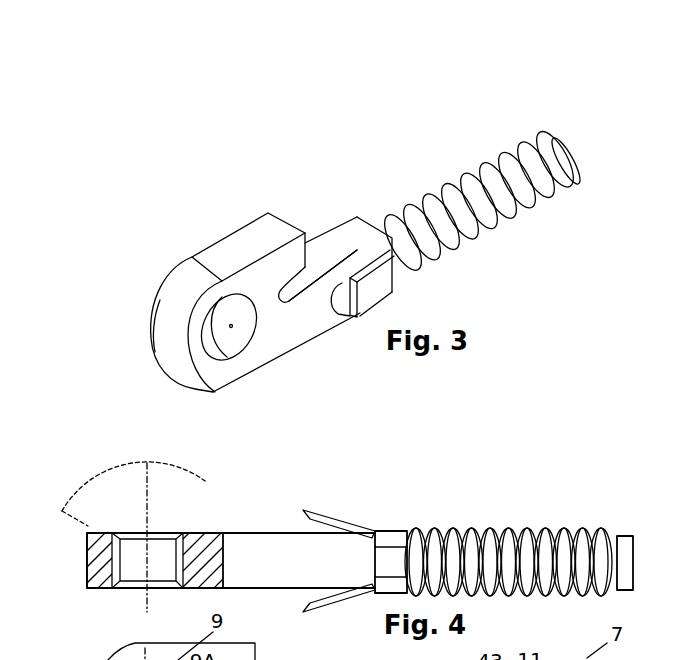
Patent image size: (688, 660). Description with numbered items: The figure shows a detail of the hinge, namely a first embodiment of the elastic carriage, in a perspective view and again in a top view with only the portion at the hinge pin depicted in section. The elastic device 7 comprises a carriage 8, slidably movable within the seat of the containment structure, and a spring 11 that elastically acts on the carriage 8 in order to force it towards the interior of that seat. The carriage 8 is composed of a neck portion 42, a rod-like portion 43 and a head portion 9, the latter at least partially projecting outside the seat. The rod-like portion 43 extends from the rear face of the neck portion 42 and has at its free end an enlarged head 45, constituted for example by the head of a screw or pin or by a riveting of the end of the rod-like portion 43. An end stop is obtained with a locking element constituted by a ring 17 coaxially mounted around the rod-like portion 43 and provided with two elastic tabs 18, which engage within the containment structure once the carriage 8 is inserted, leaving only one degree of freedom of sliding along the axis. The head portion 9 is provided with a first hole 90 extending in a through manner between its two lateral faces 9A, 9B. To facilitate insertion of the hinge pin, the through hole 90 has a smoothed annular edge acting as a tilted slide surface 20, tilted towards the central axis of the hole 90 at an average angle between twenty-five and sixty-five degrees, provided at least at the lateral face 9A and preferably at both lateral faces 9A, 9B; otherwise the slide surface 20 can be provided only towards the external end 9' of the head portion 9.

In FIG. 3, the elastic device 7 is at (352, 122).
In FIG. 4, the elastic device 7 is at (505, 464).
In FIG. 3, the carriage 8 is at (322, 347).
In FIG. 4, the carriage 8 is at (239, 506).
In FIG. 3, the head portion 9 is at (229, 276).
In FIG. 4, the head portion 9 is at (151, 529).
In FIG. 3, the external end of the head portion 9' is at (137, 358).
In FIG. 4, the external end of the head portion 9' is at (64, 560).
In FIG. 3, the lateral face of the head portion 9A is at (261, 283).
In FIG. 3, the lateral face of the head portion 9B is at (200, 253).
In FIG. 3, the spring 11 is at (536, 134).
In FIG. 4, the spring 11 is at (598, 550).
In FIG. 3, the ring 17 is at (385, 216).
In FIG. 4, the ring 17 is at (387, 540).
In FIG. 3, the elastic tabs 18 is at (372, 286).
In FIG. 4, the elastic tabs 18 is at (325, 523).
In FIG. 3, the tilted slide surface 20 is at (228, 358).
In FIG. 4, the tilted slide surface 20 is at (121, 538).
In FIG. 3, the neck portion 42 is at (333, 245).
In FIG. 4, the neck portion 42 is at (270, 550).
In FIG. 3, the rod-like portion 43 is at (468, 207).
In FIG. 4, the rod-like portion 43 is at (555, 532).
In FIG. 3, the enlarged head 45 is at (568, 148).
In FIG. 4, the enlarged head 45 is at (625, 572).
In FIG. 3, the first hole 90 is at (236, 326).
In FIG. 4, the first hole 90 is at (166, 524).